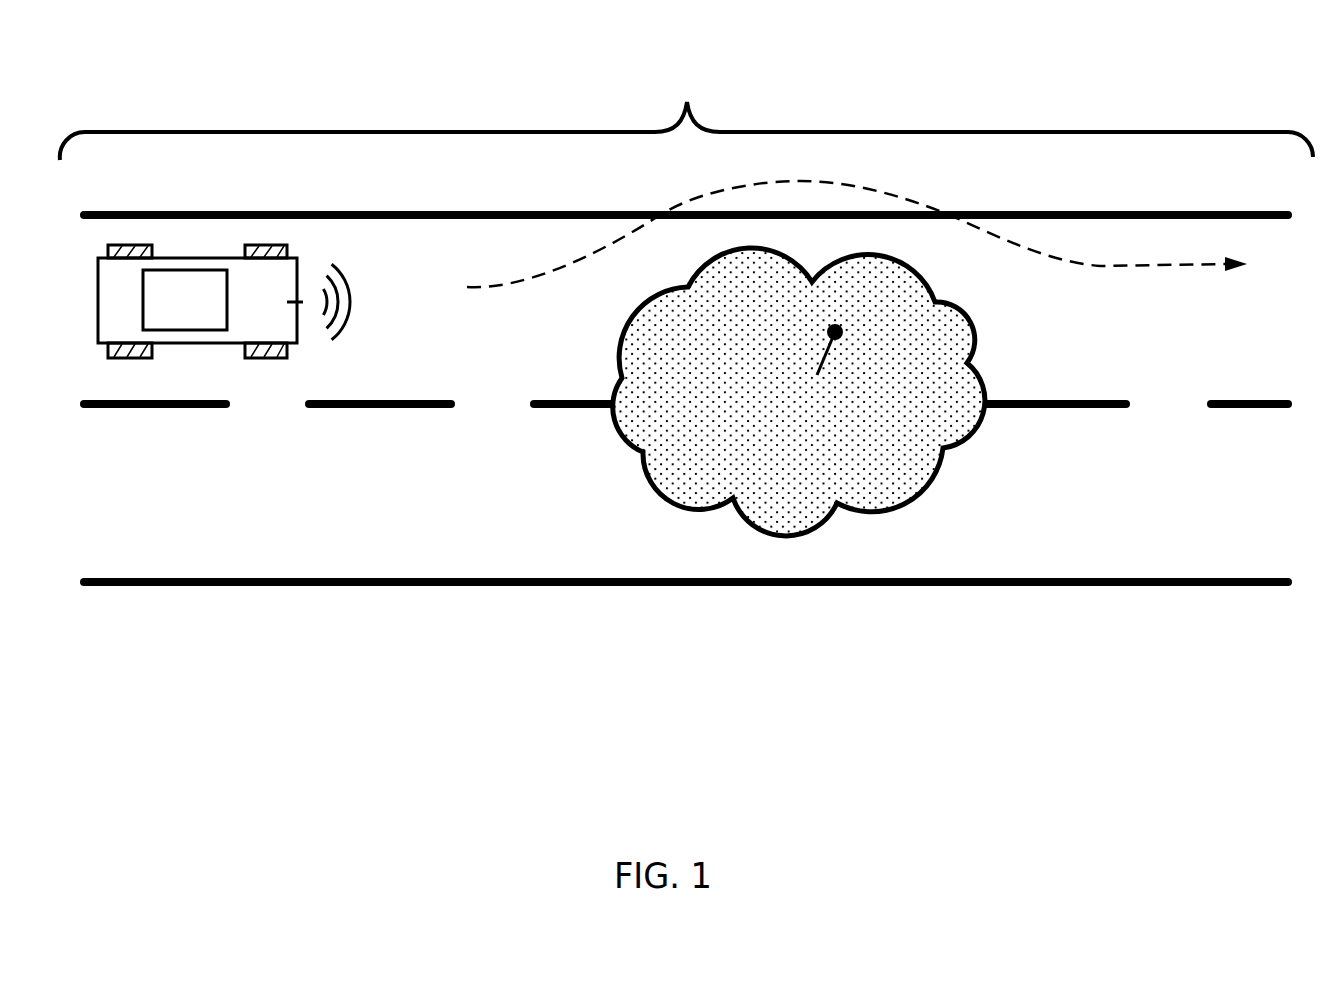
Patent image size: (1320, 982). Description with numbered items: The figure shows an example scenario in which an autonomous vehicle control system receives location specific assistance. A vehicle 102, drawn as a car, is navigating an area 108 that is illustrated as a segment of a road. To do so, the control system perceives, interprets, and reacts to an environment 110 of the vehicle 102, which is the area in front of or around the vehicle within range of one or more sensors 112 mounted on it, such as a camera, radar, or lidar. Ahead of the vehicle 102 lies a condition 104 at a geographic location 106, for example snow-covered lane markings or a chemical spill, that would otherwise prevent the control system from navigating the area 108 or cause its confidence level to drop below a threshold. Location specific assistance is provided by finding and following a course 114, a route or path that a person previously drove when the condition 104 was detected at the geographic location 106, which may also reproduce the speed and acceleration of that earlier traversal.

The vehicle 102 is at (305, 263).
The condition 104 is at (972, 320).
The geographic location 106 is at (843, 330).
The area 108 is at (686, 99).
The environment 110 is at (348, 292).
The sensors 112 is at (302, 307).
The course 114 is at (900, 198).